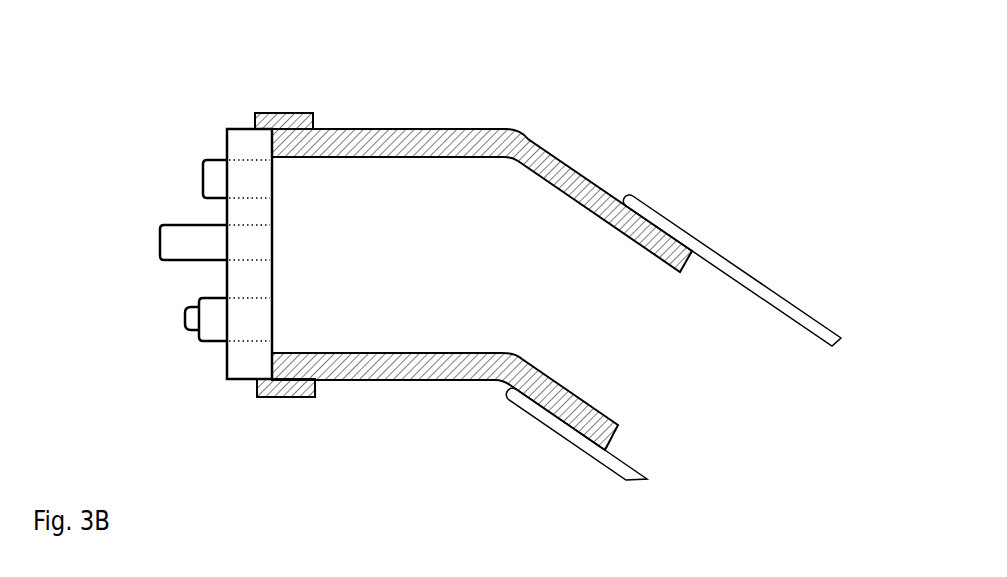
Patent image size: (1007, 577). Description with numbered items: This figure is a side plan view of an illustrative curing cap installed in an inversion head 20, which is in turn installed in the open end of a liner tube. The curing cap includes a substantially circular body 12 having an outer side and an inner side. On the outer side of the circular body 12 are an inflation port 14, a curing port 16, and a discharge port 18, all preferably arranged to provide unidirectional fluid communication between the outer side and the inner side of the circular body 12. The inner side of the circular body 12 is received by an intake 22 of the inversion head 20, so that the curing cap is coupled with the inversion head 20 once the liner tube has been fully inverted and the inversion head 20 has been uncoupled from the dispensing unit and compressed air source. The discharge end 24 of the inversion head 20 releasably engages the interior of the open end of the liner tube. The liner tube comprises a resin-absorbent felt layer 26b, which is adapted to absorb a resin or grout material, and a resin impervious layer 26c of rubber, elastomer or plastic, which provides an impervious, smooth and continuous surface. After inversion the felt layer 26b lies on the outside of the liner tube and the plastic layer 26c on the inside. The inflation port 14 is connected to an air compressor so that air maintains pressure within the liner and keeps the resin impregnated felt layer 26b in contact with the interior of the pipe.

The circular body 12 is at (244, 380).
The inflation port 14 is at (185, 319).
The curing port 16 is at (203, 178).
The discharge port 18 is at (160, 243).
The inversion head 20 is at (400, 432).
The intake 22 is at (275, 112).
The discharge end 24 is at (672, 250).
The felt layer 26b is at (763, 280).
The resin impervious layer 26c is at (727, 275).